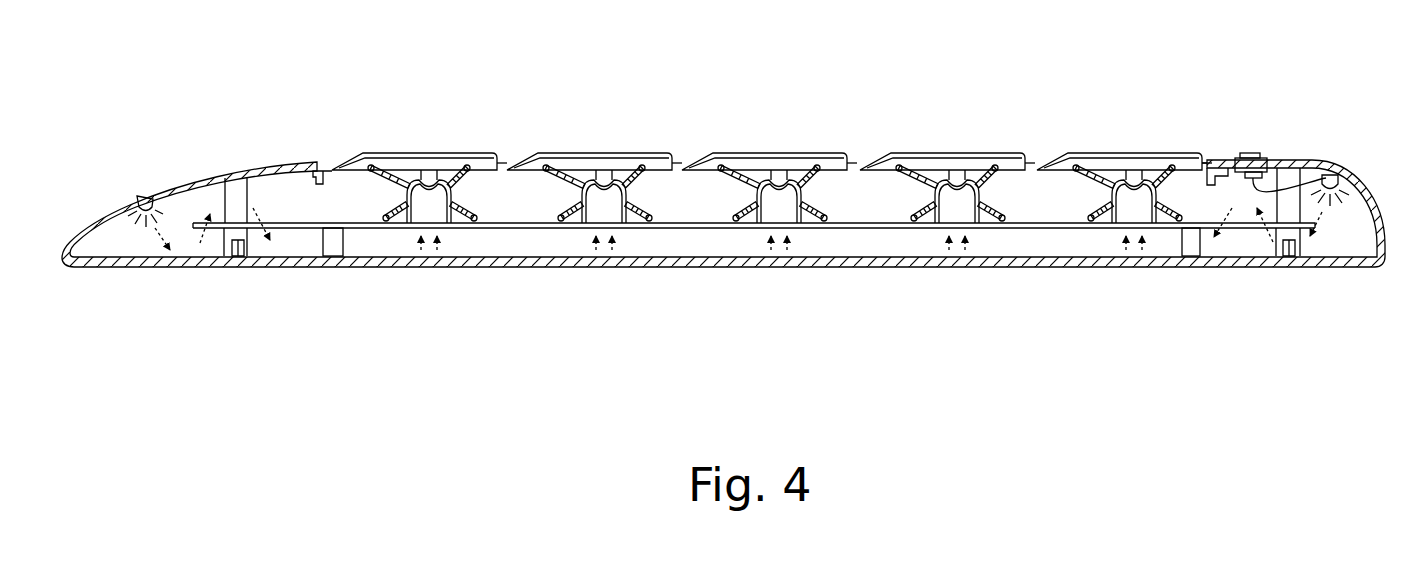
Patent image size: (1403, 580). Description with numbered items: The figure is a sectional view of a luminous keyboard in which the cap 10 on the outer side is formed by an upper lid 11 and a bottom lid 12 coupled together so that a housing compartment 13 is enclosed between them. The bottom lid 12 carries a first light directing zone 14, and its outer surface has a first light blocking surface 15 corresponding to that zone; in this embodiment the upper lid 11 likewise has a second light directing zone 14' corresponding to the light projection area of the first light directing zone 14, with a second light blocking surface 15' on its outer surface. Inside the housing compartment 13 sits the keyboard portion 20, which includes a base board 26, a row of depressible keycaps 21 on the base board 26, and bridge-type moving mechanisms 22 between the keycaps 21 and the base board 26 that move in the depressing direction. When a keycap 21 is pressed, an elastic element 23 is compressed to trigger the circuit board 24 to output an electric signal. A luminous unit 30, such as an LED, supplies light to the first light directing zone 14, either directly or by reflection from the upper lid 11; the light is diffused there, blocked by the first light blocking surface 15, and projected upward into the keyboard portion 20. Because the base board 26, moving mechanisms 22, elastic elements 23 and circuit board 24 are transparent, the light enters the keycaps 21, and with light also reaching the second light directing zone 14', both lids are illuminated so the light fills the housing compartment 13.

The cap 10 is at (70, 212).
The upper lid 11 is at (178, 226).
The bottom lid 12 is at (247, 268).
The housing compartment 13 is at (121, 218).
The first light directing zone 14 is at (787, 159).
The second light directing zone 14' is at (721, 276).
The first light blocking surface 15 is at (749, 302).
The second light blocking surface 15' is at (762, 142).
The keyboard portion 20 is at (378, 145).
The keycap 21 is at (408, 155).
The moving mechanism 22 is at (447, 160).
The elastic element 23 is at (453, 222).
The circuit board 24 is at (501, 222).
The base board 26 is at (525, 228).
The luminous unit 30 is at (146, 195).